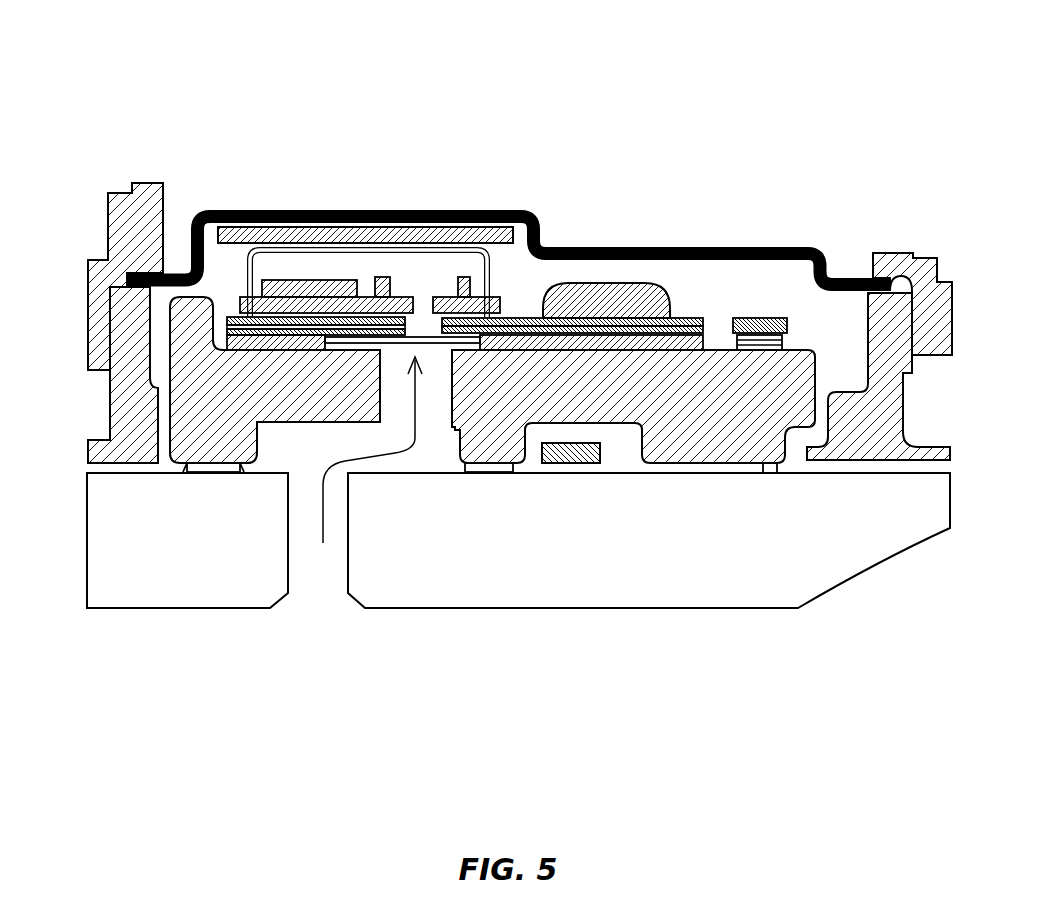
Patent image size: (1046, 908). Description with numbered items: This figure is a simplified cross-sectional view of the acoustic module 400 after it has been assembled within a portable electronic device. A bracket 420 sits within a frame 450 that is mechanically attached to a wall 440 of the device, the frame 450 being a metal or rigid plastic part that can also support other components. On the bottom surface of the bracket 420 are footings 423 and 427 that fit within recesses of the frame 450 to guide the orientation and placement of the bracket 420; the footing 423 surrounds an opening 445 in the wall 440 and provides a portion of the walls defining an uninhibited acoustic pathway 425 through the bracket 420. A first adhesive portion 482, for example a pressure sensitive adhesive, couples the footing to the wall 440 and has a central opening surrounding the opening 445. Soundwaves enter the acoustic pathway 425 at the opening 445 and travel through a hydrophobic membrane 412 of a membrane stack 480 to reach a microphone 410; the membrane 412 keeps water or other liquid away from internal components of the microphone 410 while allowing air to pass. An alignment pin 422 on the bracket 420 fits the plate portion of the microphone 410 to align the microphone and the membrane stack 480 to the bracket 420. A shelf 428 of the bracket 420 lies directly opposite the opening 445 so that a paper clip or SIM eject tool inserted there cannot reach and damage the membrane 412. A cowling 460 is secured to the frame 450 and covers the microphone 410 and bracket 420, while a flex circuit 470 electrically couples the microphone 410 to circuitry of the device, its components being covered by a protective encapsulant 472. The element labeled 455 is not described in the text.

The acoustic module 400 is at (247, 128).
The microphone 410 is at (572, 226).
The membrane 412 is at (363, 190).
The bracket 420 is at (686, 301).
The alignment pin 422 is at (114, 308).
The footing 423 is at (287, 566).
The uninhibited acoustic pathway 425 is at (372, 452).
The footing 427 is at (806, 566).
The shelf 428 is at (275, 483).
The wall 440 is at (518, 554).
The opening 445 is at (343, 639).
The frame 450 is at (880, 356).
The bottom pad 455 is at (643, 572).
The cowling 460 is at (330, 215).
The flex circuit 470 is at (712, 206).
The protective encapsulant 472 is at (625, 248).
The membrane stack 480 is at (753, 277).
The first adhesive portion 482 is at (185, 564).